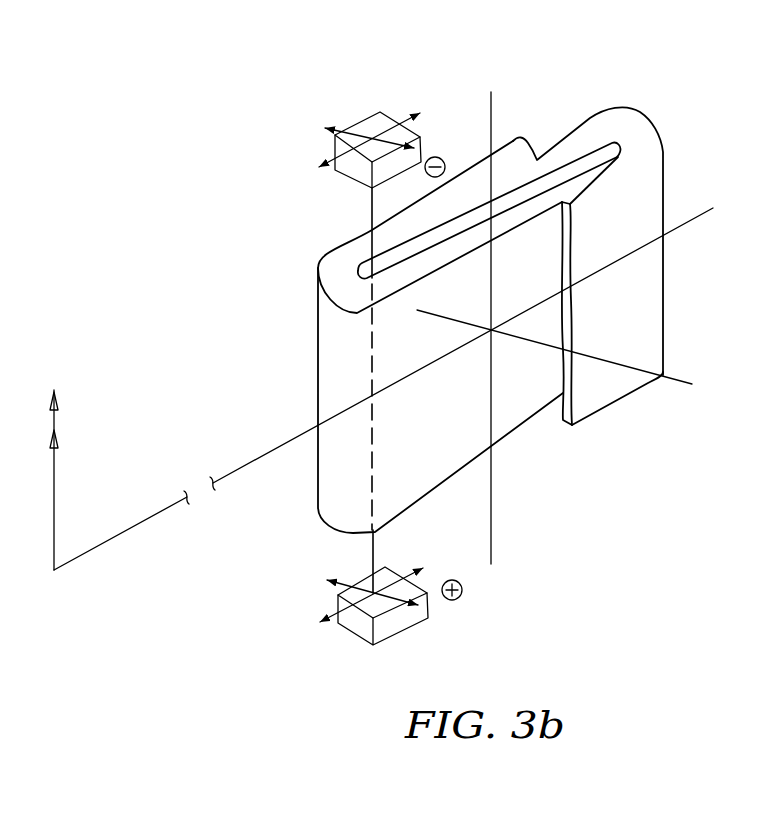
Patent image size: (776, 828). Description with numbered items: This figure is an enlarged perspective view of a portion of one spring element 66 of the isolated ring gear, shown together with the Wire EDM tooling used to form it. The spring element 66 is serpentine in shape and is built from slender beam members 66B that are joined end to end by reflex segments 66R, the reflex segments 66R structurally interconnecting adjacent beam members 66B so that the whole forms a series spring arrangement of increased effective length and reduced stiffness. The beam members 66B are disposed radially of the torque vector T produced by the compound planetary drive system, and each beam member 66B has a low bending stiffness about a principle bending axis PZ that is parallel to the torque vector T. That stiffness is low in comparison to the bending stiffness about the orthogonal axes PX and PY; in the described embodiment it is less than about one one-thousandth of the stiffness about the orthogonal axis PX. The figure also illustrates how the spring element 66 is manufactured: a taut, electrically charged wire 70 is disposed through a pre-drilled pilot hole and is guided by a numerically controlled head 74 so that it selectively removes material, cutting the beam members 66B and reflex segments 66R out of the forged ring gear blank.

The spring element 66 is at (496, 302).
The reflex segment 66R is at (280, 279).
The beam member 66B is at (513, 400).
The electrically charged wire 70 is at (356, 212).
The numerically controlled head 74 is at (379, 111).
The principle bending axis PZ is at (492, 118).
The orthogonal bending axis PY is at (683, 223).
The orthogonal bending axis PX is at (681, 379).
The torque vector T is at (57, 478).